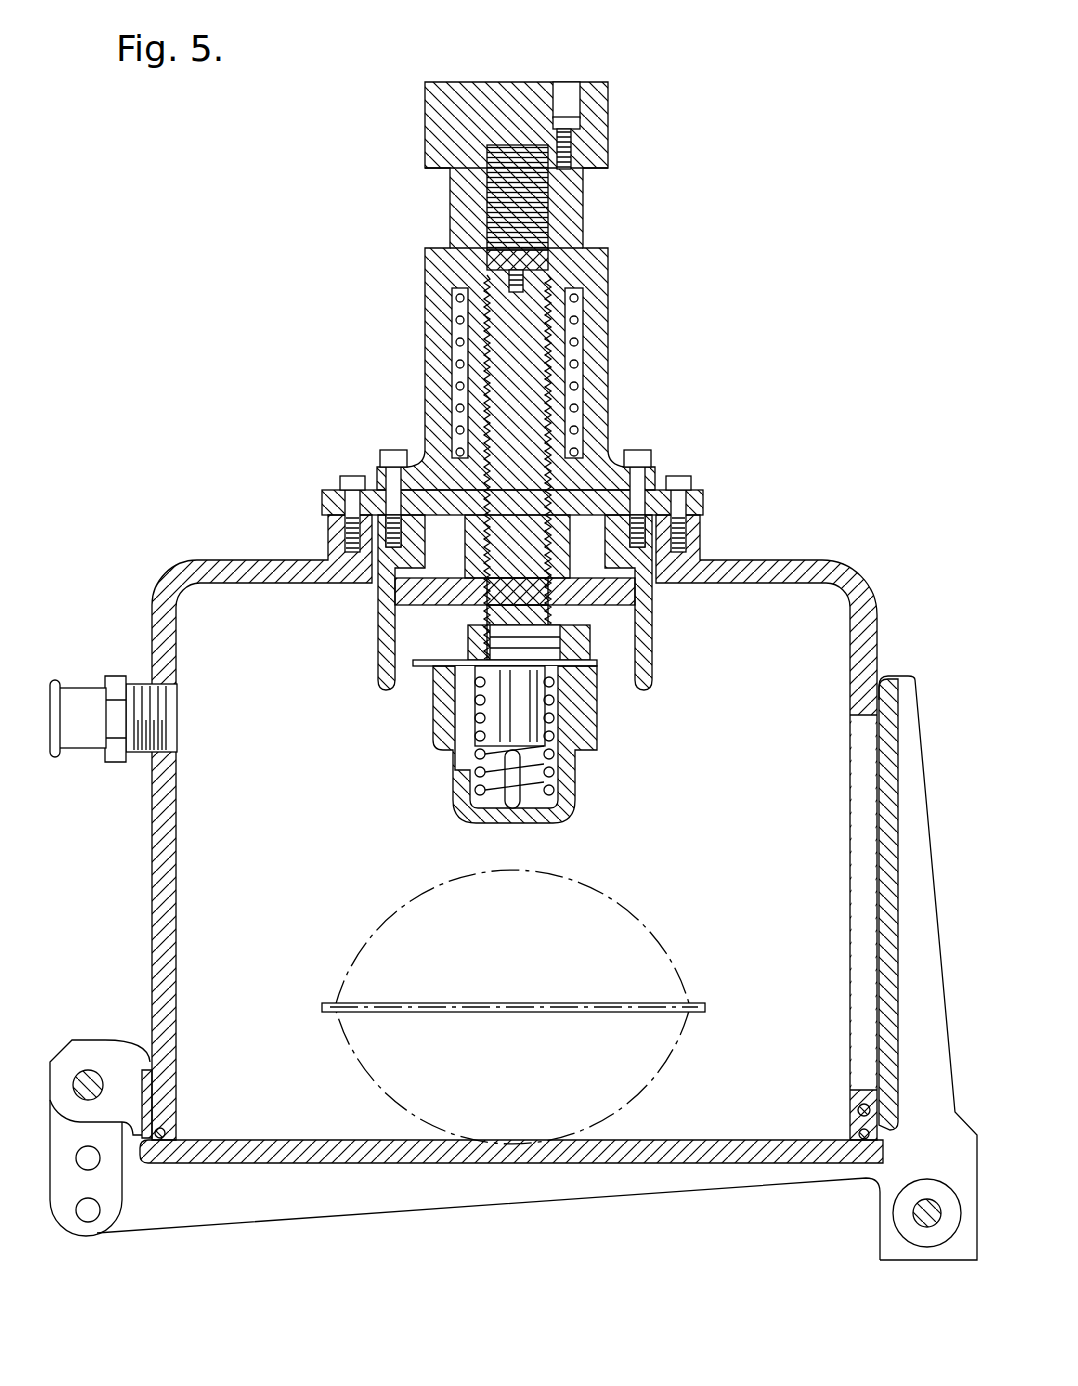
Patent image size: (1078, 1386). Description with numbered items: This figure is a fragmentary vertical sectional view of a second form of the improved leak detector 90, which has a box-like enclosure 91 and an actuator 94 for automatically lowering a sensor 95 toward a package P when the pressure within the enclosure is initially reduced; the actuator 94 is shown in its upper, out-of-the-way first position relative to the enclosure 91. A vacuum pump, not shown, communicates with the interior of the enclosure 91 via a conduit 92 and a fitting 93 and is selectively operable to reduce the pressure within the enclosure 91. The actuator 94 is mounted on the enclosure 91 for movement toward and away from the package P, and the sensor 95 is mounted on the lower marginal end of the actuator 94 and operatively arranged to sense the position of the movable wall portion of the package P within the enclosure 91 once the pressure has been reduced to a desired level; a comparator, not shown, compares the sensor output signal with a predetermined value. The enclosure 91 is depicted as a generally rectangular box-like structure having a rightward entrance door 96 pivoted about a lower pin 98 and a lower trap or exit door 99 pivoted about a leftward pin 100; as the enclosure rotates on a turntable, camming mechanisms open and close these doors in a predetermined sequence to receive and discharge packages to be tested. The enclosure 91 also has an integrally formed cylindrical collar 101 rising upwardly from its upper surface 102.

The leak detector 90 is at (790, 228).
The enclosure 91 is at (722, 556).
The conduit 92 is at (90, 692).
The fitting 93 is at (168, 706).
The actuator 94 is at (604, 624).
The sensor 95 is at (596, 766).
The entrance door 96 is at (892, 857).
The lower pin 98 is at (926, 1226).
The exit door 99 is at (440, 1164).
The leftward pin 100 is at (90, 1072).
The cylindrical collar 101 is at (338, 522).
The upper surface 102 is at (778, 565).
The package P is at (648, 893).